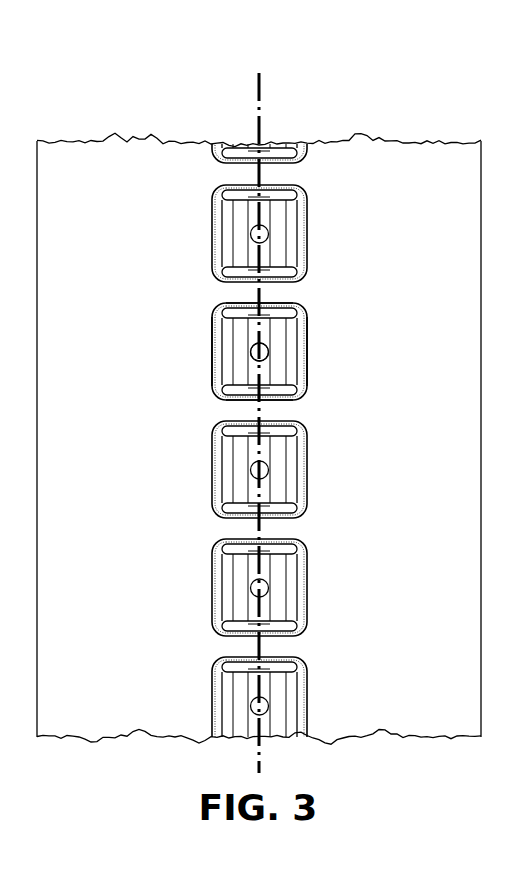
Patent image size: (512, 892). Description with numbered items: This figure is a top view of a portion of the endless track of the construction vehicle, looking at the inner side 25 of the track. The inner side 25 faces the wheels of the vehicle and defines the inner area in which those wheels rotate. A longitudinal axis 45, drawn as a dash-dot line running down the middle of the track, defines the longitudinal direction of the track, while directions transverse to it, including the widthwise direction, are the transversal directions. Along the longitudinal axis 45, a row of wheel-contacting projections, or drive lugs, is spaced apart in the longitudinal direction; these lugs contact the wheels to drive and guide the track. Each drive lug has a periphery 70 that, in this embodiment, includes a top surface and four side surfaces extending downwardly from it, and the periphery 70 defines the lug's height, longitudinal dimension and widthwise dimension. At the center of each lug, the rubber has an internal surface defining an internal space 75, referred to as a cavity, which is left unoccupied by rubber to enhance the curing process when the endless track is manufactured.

The inner side 25 is at (409, 193).
The longitudinal axis 45 is at (261, 90).
The periphery 70 is at (233, 302).
The internal space 75 is at (259, 350).